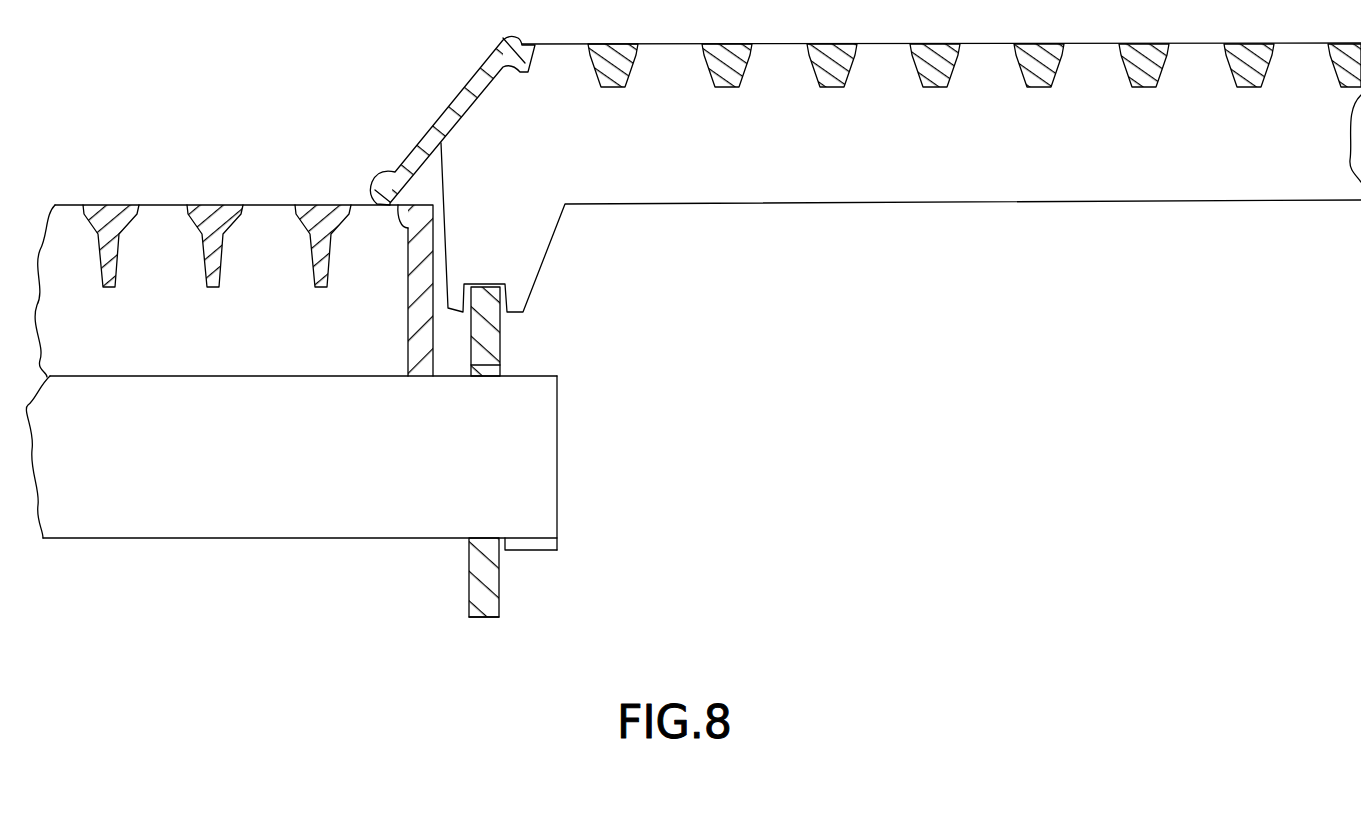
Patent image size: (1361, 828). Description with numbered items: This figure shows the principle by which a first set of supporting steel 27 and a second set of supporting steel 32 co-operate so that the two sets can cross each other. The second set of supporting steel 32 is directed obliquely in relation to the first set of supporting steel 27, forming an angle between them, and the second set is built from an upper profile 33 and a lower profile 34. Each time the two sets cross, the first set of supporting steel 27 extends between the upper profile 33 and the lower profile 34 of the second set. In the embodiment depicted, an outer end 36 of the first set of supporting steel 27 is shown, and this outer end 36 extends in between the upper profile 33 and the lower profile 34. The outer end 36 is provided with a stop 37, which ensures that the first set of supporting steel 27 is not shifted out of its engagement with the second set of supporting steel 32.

The first set of supporting steel 27 is at (323, 487).
The second set of supporting steel 32 is at (484, 624).
The upper profile 33 is at (493, 333).
The lower profile 34 is at (488, 590).
The outer end 36 is at (568, 462).
The stop 37 is at (535, 547).